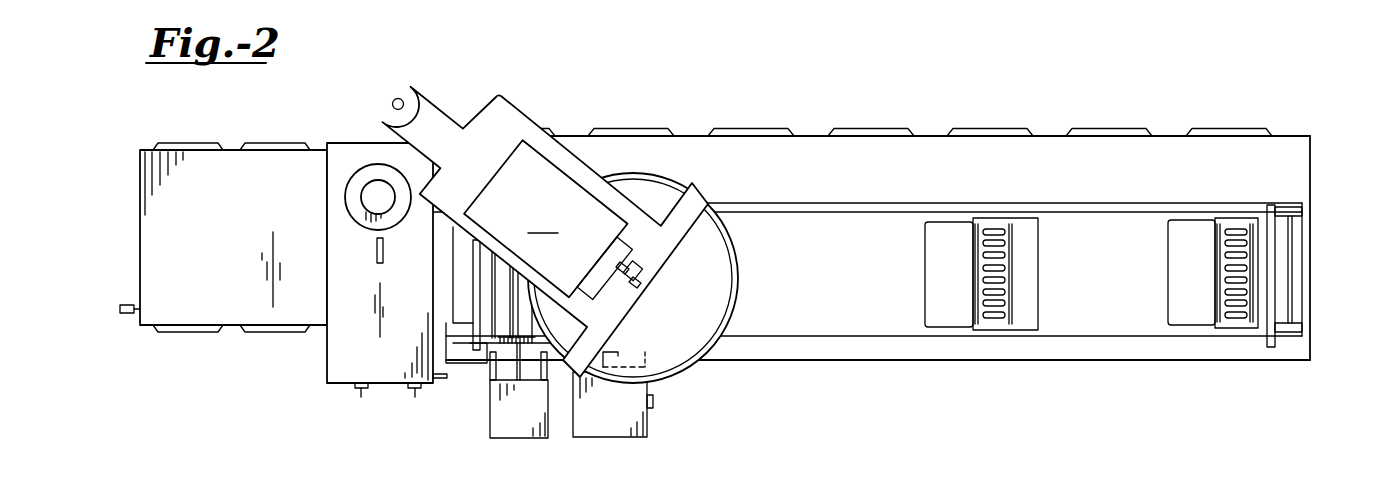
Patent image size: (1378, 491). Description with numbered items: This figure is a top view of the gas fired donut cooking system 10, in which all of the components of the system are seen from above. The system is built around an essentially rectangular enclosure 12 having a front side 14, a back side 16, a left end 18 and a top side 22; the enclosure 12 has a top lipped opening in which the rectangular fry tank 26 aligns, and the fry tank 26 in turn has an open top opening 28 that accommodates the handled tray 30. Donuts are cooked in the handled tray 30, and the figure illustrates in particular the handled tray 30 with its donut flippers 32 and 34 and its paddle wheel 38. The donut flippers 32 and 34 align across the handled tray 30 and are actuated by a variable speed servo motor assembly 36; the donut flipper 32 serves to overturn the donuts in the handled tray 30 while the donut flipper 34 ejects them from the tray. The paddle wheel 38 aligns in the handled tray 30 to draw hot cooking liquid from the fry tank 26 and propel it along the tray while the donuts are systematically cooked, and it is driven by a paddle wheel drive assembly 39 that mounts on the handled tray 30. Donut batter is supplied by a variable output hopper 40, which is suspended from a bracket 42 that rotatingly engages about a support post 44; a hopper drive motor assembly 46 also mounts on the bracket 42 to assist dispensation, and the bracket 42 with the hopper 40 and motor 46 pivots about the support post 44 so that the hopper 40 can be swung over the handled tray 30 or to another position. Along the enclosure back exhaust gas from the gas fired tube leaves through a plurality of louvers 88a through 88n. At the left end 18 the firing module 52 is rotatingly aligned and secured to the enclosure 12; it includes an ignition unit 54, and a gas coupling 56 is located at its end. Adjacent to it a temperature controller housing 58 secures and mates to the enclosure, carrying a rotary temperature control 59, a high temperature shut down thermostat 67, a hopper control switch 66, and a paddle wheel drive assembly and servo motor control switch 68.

The gas fired donut cooking system 10 is at (1060, 94).
The enclosure 12 is at (1310, 165).
The front side 14 is at (987, 362).
The back side 16 is at (933, 133).
The left end 18 is at (453, 260).
The top side 22 is at (1285, 155).
The fry tank 26 is at (1312, 263).
The open top opening 28 is at (1102, 314).
The handled tray 30 is at (1250, 348).
The donut flipper 32 is at (938, 327).
The donut flipper 34 is at (1198, 325).
The variable speed servo motor assembly 36 is at (597, 425).
The paddle wheel 38 is at (500, 337).
The paddle wheel drive assembly 39 is at (508, 428).
The variable output hopper 40 is at (740, 287).
The bracket 42 is at (546, 208).
The support post 44 is at (403, 94).
The hopper drive motor assembly 46 is at (553, 219).
The firing module 52 is at (227, 150).
The ignition unit 54 is at (235, 152).
The gas coupling 56 is at (127, 313).
The temperature controller housing 58 is at (328, 142).
The rotary temperature control 59 is at (373, 180).
The hopper control switch 66 is at (360, 397).
The high temperature shut down thermostat 67 is at (442, 380).
The paddle wheel drive assembly and servo motor control switch 68 is at (415, 395).
The louver 88a is at (557, 130).
The louver 88n is at (1213, 128).